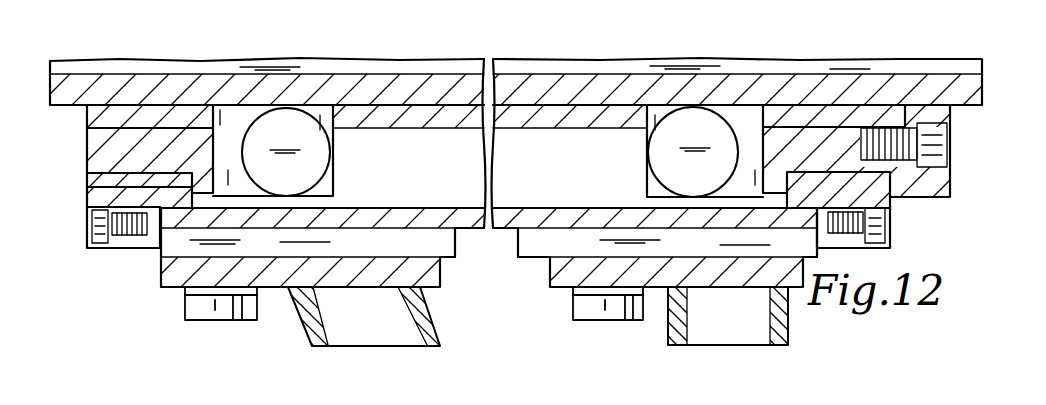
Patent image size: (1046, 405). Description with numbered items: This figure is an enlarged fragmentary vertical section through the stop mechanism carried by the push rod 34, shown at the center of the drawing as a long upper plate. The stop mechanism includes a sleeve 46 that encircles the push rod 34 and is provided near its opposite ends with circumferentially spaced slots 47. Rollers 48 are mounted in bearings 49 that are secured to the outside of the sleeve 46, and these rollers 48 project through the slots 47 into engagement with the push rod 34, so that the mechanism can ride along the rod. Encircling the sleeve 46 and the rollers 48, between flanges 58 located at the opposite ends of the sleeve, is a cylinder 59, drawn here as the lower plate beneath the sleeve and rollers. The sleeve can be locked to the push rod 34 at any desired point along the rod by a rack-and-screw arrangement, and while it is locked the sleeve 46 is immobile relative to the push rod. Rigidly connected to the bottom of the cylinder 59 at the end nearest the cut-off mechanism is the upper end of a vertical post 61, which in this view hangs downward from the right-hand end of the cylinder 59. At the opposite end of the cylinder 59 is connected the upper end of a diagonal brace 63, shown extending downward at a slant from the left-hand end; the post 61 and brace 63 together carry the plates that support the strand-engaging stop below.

The push rod 34 is at (504, 83).
The sleeve 46 is at (412, 120).
The slots 47 is at (763, 120).
The rollers 48 is at (333, 165).
The bearings 49 is at (652, 187).
The flanges 58 is at (96, 248).
The cylinder 59 is at (516, 230).
The vertical post 61 is at (668, 329).
The diagonal brace 63 is at (418, 310).